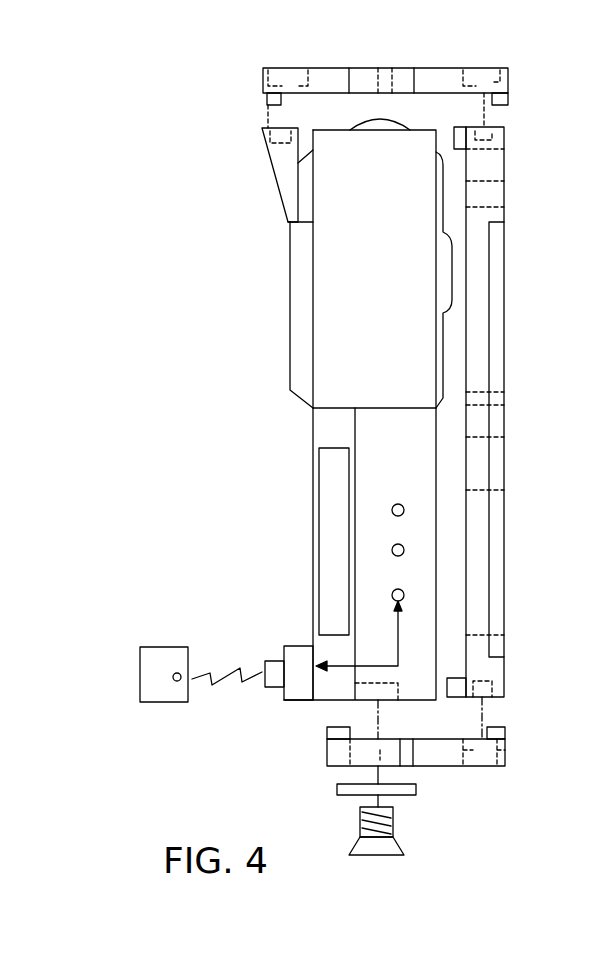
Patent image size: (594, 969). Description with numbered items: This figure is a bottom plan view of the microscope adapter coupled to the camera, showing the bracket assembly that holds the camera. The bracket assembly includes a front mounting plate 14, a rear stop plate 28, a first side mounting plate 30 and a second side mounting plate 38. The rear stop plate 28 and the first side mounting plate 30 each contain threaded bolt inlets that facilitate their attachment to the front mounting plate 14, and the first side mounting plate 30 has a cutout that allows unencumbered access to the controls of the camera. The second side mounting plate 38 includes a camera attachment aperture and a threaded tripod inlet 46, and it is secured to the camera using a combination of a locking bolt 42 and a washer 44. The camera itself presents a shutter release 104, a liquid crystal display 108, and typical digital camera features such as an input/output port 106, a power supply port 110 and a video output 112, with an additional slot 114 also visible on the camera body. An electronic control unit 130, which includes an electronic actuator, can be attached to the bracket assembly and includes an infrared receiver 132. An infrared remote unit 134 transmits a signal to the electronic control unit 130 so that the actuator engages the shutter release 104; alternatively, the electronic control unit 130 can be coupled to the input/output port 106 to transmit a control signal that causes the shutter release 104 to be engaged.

The front mounting plate 14 is at (513, 673).
The rear stop plate 28 is at (278, 189).
The first side mounting plate 30 is at (435, 66).
The second side mounting plate 38 is at (457, 772).
The locking bolt 42 is at (397, 841).
The washer 44 is at (337, 790).
The threaded tripod inlet 46 is at (376, 700).
The shutter release 104 is at (395, 119).
The input/output port 106 is at (392, 597).
The liquid crystal display 108 is at (290, 292).
The power supply port 110 is at (392, 510).
The video output 112 is at (392, 551).
The slot 114 is at (340, 456).
The electronic control unit 130 is at (290, 646).
The infrared receiver 132 is at (275, 688).
The infrared remote unit 134 is at (160, 647).